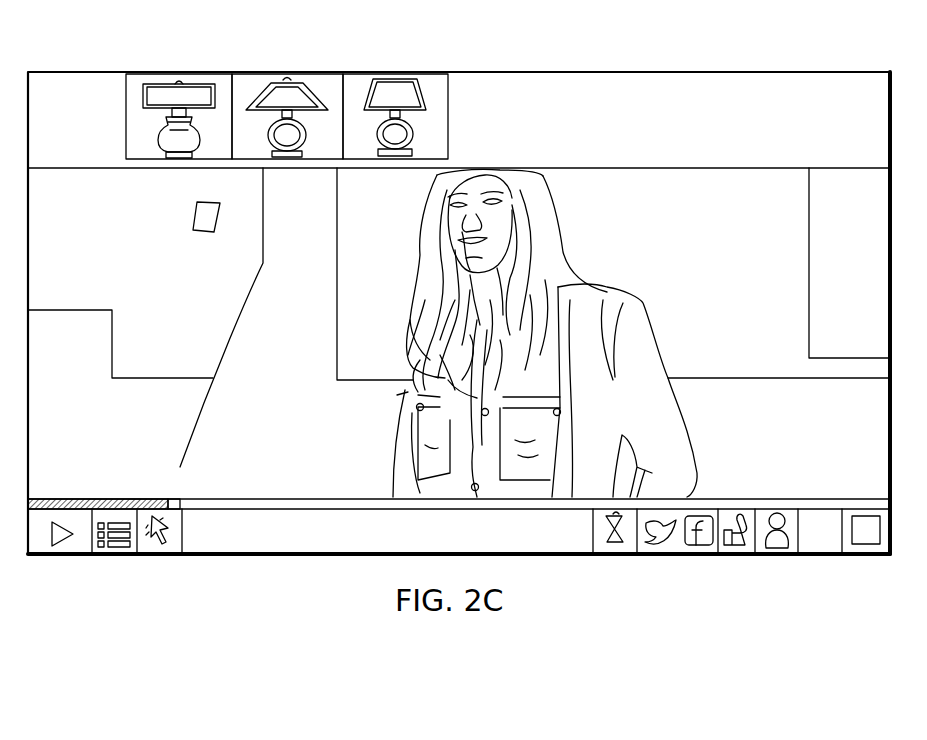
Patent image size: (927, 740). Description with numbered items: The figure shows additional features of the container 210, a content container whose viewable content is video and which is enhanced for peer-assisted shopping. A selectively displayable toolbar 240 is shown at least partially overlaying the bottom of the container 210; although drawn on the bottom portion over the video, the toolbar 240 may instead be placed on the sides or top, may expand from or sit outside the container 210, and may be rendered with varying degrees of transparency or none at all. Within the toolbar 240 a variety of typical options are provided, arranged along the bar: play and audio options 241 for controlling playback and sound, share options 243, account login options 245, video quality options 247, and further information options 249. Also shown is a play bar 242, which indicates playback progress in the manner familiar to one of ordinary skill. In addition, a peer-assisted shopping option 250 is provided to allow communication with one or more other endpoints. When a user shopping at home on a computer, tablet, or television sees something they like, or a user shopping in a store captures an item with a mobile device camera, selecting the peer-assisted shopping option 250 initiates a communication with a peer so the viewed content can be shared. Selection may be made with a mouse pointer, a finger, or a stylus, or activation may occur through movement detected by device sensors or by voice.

The container 210 is at (469, 370).
The toolbar 240 is at (312, 559).
The play and audio options 241 is at (182, 570).
The play bar 242 is at (72, 503).
The share options 243 is at (755, 565).
The account login options 245 is at (782, 556).
The video quality options 247 is at (830, 556).
The further information options 249 is at (872, 556).
The peer-assisted shopping option 250 is at (617, 556).